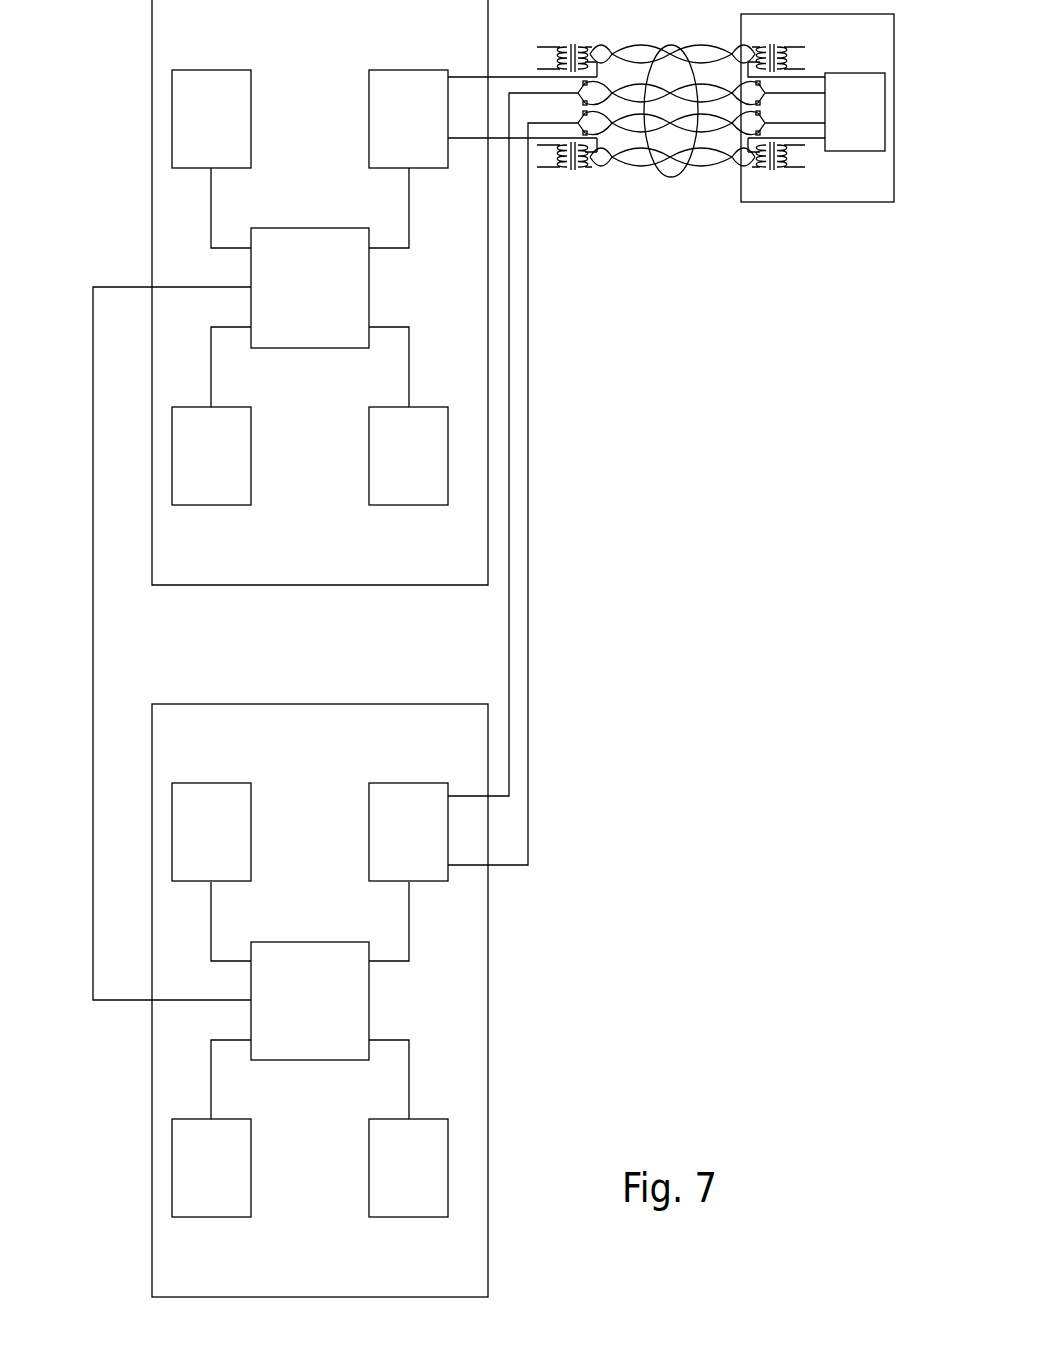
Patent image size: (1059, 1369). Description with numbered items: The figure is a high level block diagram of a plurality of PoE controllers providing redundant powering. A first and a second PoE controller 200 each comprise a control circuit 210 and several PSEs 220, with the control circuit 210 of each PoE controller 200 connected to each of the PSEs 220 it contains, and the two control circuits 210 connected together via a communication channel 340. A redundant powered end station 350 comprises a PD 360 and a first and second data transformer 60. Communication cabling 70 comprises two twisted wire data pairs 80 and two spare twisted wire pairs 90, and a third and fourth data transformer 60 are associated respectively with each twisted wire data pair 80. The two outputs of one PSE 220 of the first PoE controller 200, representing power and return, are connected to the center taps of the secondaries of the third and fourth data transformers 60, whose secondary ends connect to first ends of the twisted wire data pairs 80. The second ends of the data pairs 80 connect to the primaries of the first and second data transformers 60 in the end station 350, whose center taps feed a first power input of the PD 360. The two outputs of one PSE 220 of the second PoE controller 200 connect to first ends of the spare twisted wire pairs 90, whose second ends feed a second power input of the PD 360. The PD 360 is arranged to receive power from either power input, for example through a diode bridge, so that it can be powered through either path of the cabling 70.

The data transformer 60 is at (582, 46).
The communication cabling 70 is at (670, 45).
The twisted wire data pair 80 is at (698, 47).
The spare twisted wire pair 90 is at (577, 122).
The PoE controller 200 is at (290, 585).
The control circuit 210 is at (290, 348).
The PSE 220 is at (222, 70).
The communication channel 340 is at (93, 502).
The redundant powered end station 350 is at (832, 203).
The PD 360 is at (878, 153).